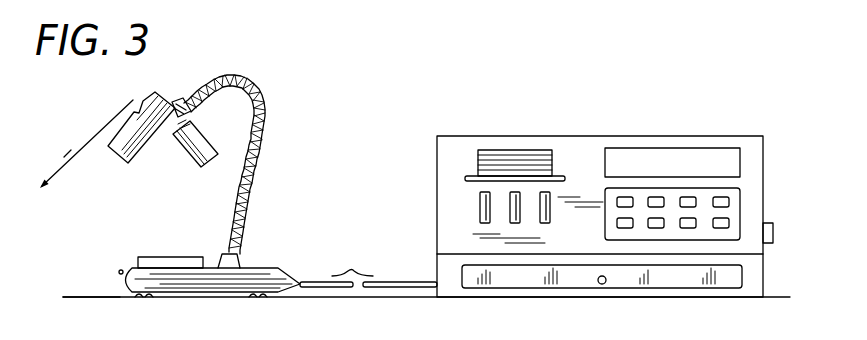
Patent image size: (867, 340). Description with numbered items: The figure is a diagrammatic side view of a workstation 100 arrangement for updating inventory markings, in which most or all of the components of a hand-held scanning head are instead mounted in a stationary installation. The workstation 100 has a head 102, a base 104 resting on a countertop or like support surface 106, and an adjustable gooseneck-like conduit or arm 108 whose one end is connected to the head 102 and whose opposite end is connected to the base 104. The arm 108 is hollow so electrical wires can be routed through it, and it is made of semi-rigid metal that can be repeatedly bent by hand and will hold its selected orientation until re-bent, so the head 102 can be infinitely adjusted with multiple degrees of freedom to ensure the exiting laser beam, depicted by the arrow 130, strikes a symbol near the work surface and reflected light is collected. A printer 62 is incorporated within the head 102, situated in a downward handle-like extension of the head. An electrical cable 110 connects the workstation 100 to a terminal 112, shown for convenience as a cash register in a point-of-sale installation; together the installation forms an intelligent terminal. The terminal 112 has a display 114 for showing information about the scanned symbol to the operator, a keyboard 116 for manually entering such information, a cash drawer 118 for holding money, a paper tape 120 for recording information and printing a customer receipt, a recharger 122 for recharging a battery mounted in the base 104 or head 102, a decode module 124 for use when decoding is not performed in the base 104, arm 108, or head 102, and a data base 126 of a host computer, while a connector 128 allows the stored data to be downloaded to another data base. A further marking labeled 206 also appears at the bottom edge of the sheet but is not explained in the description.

The workstation 100 is at (296, 72).
The head 102 is at (147, 96).
The printer 62 is at (182, 146).
The gooseneck-like conduit or arm 108 is at (252, 164).
The arrow depicting exiting laser beam 130 is at (86, 144).
The base 104 is at (267, 277).
The countertop or support surface 106 is at (100, 294).
The electrical cable 110 is at (412, 282).
The terminal 112 is at (602, 128).
The display 114 is at (653, 158).
The keyboard 116 is at (722, 196).
The cash drawer 118 is at (732, 289).
The paper tape 120 is at (508, 152).
The recharger 122 is at (480, 198).
The decode module 124 is at (513, 226).
The data base 126 is at (555, 206).
The connector 128 is at (768, 226).
The element 206 is at (255, 336).